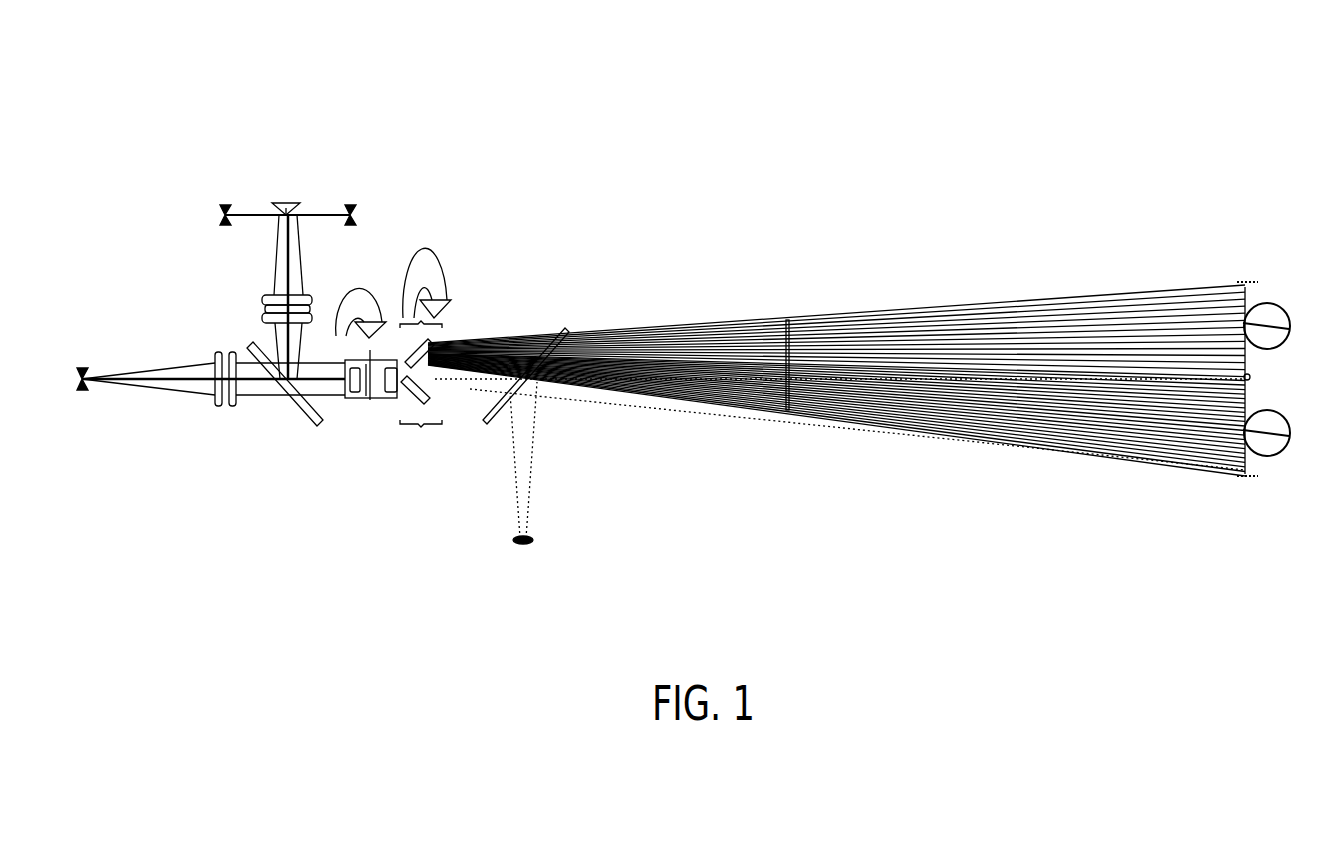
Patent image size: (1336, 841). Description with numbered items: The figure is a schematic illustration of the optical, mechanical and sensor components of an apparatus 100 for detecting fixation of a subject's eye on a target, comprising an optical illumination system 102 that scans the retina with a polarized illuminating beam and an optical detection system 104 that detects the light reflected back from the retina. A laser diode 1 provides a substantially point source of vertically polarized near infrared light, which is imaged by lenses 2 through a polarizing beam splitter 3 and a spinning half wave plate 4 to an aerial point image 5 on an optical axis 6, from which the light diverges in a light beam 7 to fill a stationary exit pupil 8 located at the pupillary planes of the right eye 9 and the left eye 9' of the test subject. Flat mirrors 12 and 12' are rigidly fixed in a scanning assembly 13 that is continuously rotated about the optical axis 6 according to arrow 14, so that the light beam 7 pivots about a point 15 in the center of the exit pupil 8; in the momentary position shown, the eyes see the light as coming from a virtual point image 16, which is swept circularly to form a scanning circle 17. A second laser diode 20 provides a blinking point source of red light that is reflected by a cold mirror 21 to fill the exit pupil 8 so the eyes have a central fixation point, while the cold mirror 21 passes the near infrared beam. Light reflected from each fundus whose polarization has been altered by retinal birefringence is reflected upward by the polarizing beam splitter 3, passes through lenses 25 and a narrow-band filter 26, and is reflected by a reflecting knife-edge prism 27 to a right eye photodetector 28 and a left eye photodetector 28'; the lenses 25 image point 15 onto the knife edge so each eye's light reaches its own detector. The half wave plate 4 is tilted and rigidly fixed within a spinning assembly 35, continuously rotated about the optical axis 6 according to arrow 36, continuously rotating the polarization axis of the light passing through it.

The laser diode 1 is at (83, 392).
The lenses 2 is at (225, 408).
The polarizing beam splitter 3 is at (311, 422).
The spinning half wave plate 4 is at (347, 394).
The aerial point image 5 is at (391, 399).
The optical axis 6 is at (478, 392).
The light beam 7 is at (792, 338).
The stationary exit pupil 8 is at (1245, 482).
The right eye 9 is at (1287, 326).
The left eye 9' is at (1266, 466).
The flat mirror 12 is at (432, 412).
The flat mirror 12' is at (447, 337).
The scanning assembly 13 is at (420, 432).
The arrow 14 is at (439, 265).
The point 15 is at (1251, 380).
The virtual point image 16 is at (384, 336).
The scanning circle 17 is at (374, 400).
The laser diode 20 is at (514, 539).
The cold mirror 21 is at (494, 424).
The lenses 25 is at (262, 308).
The narrow-band filter 26 is at (314, 306).
The reflecting knife-edge prism 27 is at (288, 203).
The right eye photodetector 28 is at (331, 239).
The left eye photodetector 28' is at (266, 244).
The spinning assembly 35 is at (366, 398).
The arrow 36 is at (367, 296).
The apparatus 100 is at (622, 104).
The optical illumination system 102 is at (174, 528).
The optical detection system 104 is at (366, 126).